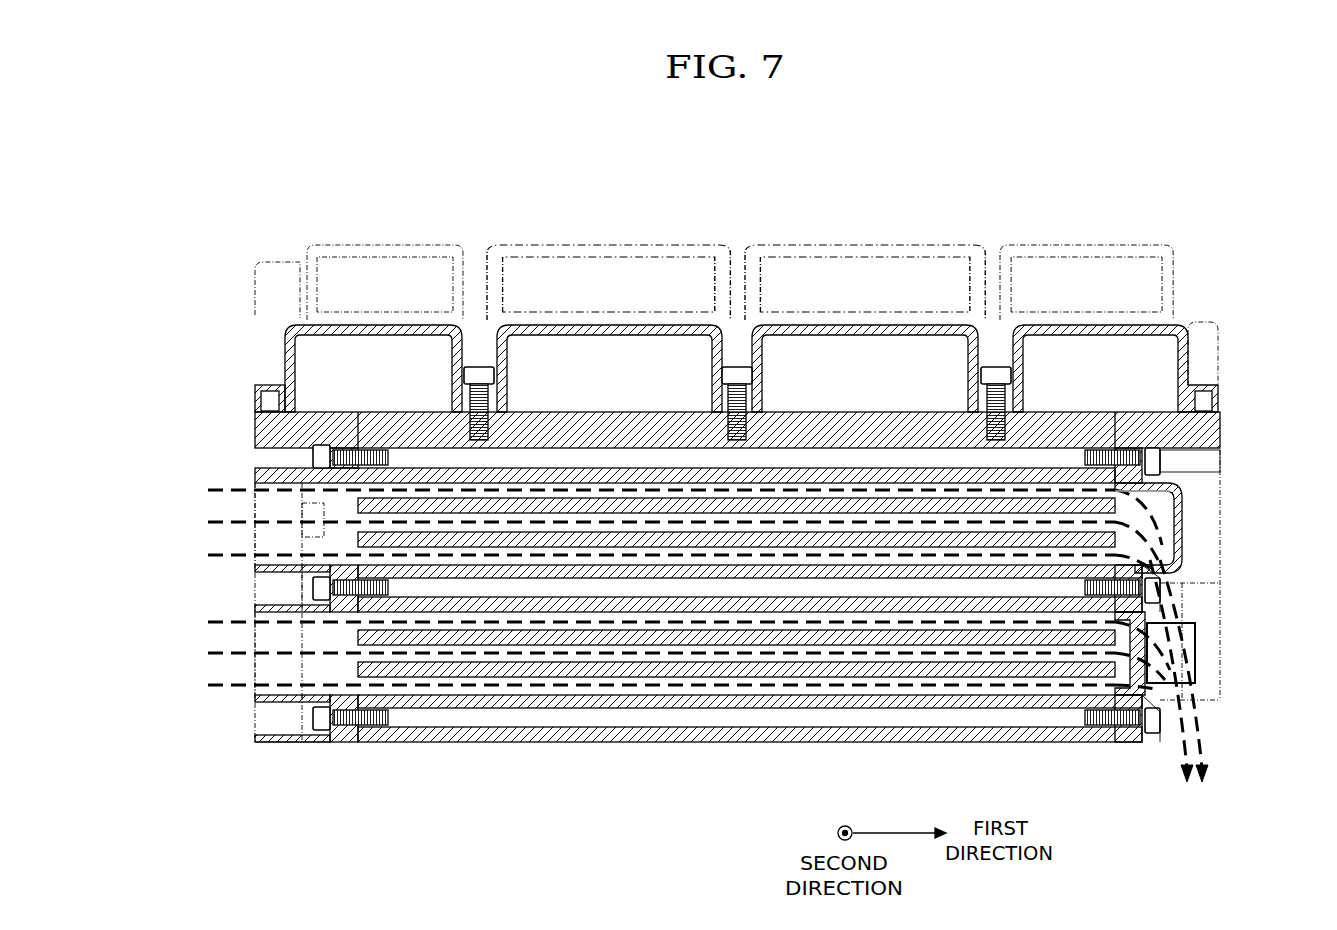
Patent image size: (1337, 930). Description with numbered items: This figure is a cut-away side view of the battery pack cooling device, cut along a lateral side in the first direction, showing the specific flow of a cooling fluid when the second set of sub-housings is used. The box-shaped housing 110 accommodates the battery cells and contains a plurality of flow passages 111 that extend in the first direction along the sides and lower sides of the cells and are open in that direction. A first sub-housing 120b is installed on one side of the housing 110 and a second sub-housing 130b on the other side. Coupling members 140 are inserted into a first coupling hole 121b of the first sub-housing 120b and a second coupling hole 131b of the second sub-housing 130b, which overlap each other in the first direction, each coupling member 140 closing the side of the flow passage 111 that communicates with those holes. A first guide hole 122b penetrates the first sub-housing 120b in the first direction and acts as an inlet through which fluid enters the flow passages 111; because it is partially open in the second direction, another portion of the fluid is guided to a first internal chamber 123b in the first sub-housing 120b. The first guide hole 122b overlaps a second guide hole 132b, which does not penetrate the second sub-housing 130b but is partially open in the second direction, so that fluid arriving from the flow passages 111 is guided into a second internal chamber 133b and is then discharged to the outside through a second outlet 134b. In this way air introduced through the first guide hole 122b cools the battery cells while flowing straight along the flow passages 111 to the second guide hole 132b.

The housing 110 is at (633, 758).
The flow passages 111 is at (826, 627).
The first sub-housing 120b is at (268, 428).
The first coupling hole 121b is at (285, 452).
The first guide hole 122b is at (285, 533).
The first internal chamber 123b is at (335, 668).
The second sub-housing 130b is at (1170, 517).
The second coupling hole 131b is at (1175, 466).
The second guide hole 132b is at (1157, 526).
The second internal chamber 133b is at (1187, 645).
The second outlet 134b is at (1195, 668).
The coupling members 140 is at (323, 725).